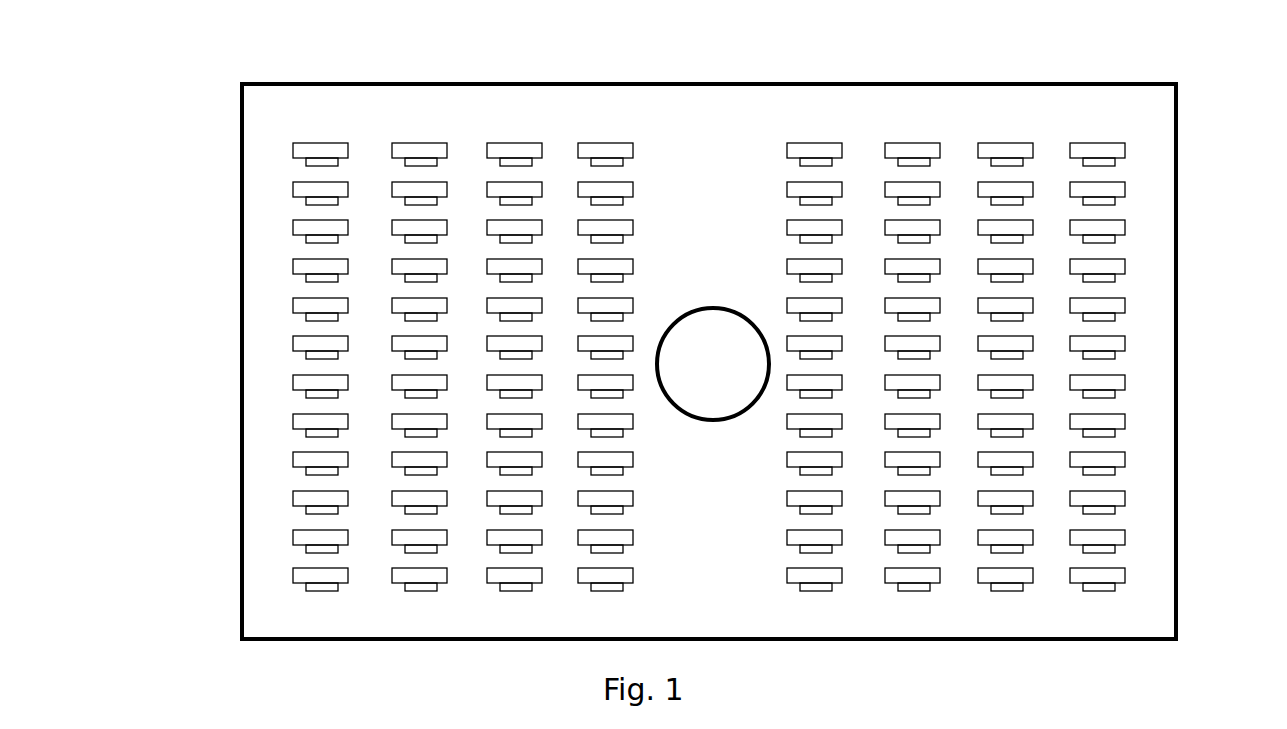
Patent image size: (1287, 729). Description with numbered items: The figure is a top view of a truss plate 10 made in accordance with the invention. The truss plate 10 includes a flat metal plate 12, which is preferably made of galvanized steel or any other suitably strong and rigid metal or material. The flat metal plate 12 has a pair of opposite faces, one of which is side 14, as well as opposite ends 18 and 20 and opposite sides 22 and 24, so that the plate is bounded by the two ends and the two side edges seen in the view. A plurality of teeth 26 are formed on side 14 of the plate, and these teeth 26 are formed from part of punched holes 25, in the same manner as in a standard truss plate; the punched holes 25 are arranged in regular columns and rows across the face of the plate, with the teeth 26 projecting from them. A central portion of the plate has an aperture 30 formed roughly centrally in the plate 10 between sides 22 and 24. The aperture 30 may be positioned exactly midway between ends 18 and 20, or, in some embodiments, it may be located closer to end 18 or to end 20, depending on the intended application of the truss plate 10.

The truss plate 10 is at (139, 179).
The flat metal plate 12 is at (252, 110).
The side 14 is at (716, 549).
The end 18 is at (242, 375).
The end 20 is at (1177, 360).
The side 22 is at (777, 84).
The side 24 is at (800, 641).
The punched holes 25 is at (1125, 418).
The teeth 26 is at (1105, 515).
The aperture 30 is at (713, 308).